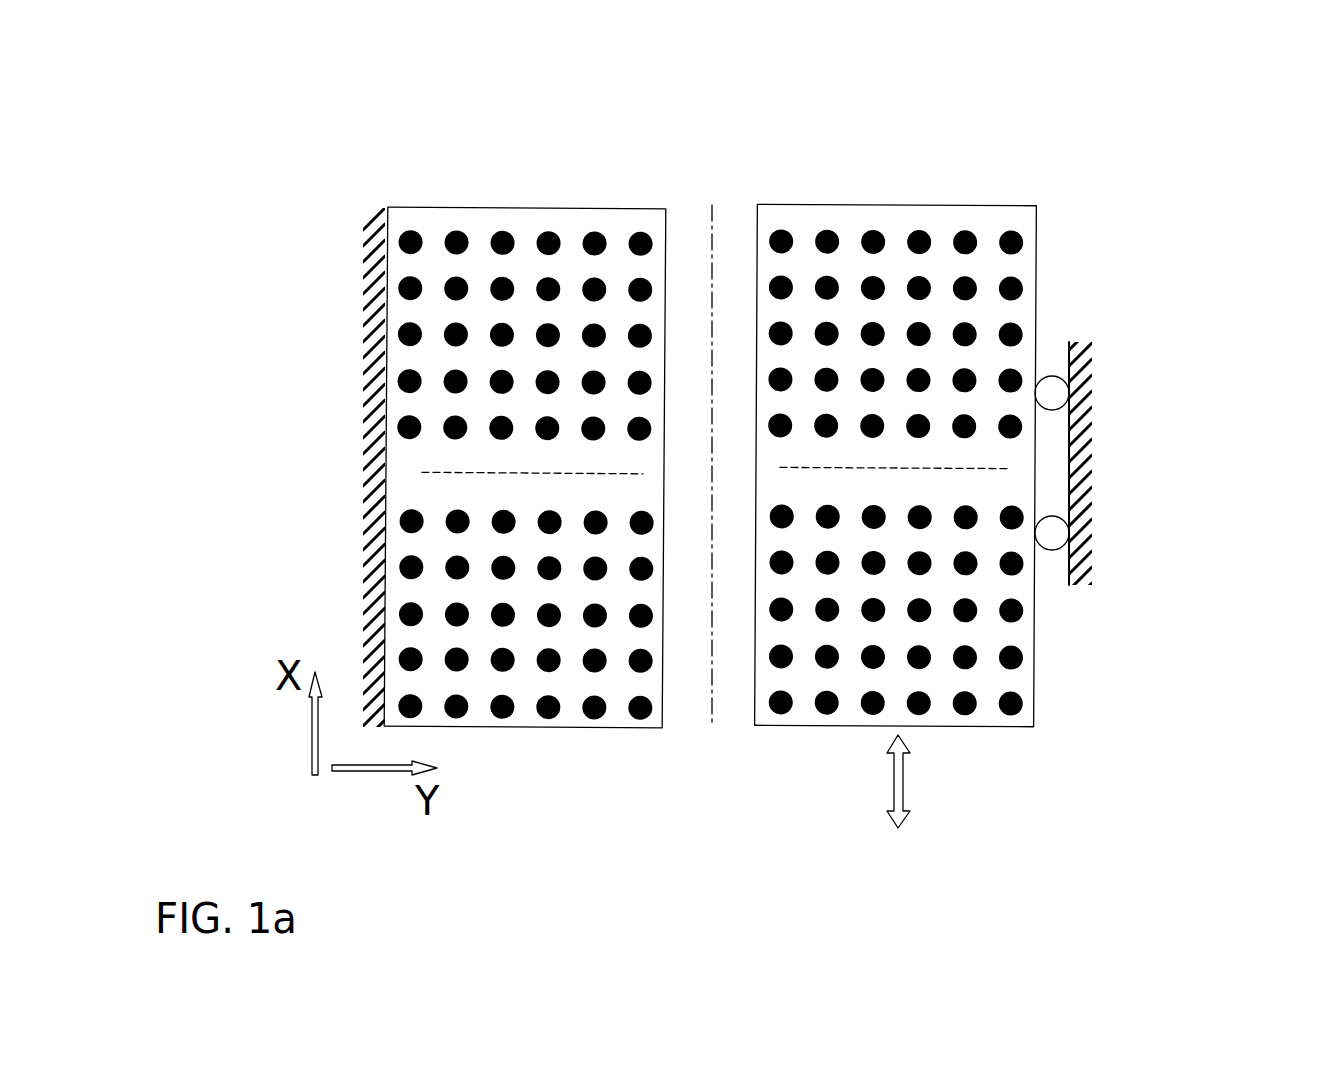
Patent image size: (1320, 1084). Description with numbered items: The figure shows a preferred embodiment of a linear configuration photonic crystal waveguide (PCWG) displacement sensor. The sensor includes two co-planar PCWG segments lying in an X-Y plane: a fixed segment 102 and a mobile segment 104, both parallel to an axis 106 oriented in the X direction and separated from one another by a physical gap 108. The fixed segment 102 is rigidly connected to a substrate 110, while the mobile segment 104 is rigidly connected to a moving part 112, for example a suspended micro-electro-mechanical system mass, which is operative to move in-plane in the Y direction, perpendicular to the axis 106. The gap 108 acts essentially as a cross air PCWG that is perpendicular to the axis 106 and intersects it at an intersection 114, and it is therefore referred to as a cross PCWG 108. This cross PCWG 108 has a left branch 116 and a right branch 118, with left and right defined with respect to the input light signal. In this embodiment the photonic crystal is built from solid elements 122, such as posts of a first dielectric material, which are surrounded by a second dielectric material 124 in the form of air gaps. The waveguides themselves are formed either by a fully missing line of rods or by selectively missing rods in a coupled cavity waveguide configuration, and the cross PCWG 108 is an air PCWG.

The fixed segment 102 is at (450, 197).
The mobile segment 104 is at (983, 193).
The axis 106 is at (945, 470).
The physical gap 108 is at (738, 230).
The substrate 110 is at (380, 470).
The moving part 112 is at (1085, 465).
The intersection 114 is at (723, 460).
The left branch 116 is at (712, 246).
The right branch 118 is at (702, 680).
The solid elements 122 is at (635, 713).
The second dielectric material 124 is at (570, 682).